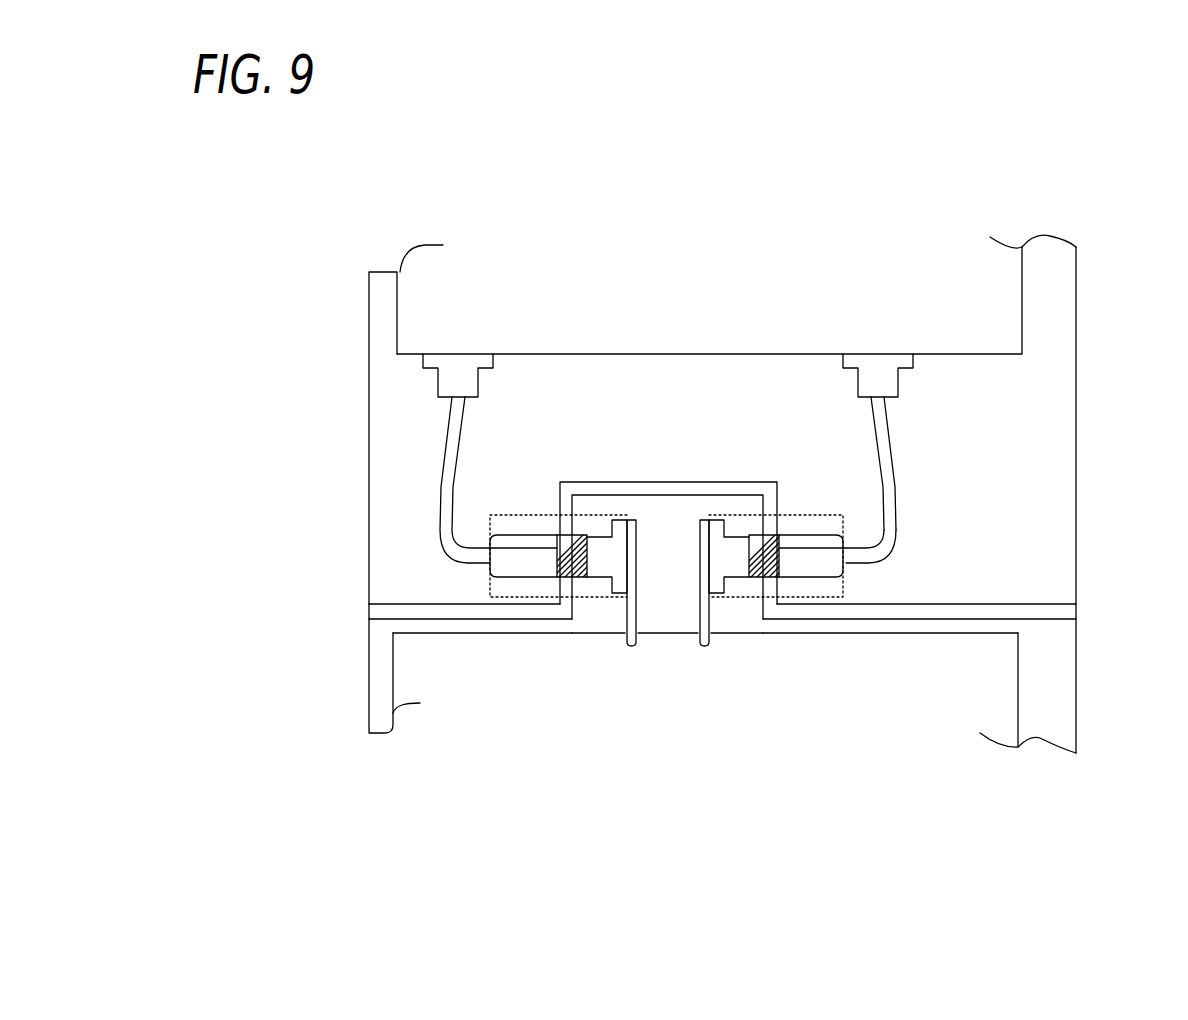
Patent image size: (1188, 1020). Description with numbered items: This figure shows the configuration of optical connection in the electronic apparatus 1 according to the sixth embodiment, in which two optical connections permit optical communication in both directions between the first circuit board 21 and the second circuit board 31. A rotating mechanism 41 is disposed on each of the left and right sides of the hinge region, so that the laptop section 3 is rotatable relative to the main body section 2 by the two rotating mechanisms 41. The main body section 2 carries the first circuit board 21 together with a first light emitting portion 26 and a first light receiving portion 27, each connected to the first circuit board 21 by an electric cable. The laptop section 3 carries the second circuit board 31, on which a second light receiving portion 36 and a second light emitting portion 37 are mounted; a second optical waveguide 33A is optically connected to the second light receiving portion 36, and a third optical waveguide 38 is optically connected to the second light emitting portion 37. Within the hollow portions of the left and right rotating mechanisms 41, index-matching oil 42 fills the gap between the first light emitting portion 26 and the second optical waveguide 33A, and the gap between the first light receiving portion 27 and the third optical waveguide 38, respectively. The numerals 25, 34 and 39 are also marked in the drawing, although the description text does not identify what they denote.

The electronic apparatus 1 is at (1024, 194).
The main body section 2 is at (1058, 662).
The laptop section 3 is at (1057, 273).
The first circuit board 21 is at (602, 658).
The pin terminal 25 is at (627, 612).
The first light emitting portion 26 is at (608, 568).
The first light receiving portion 27 is at (720, 570).
The second circuit board 31 is at (397, 303).
The second optical waveguide 33A is at (445, 443).
The terminal 34 is at (665, 512).
The second light receiving portion 36 is at (437, 382).
The second light emitting portion 37 is at (900, 385).
The third optical waveguide 38 is at (890, 448).
The wire bent portion 39 is at (897, 537).
The rotating mechanism 41 is at (490, 590).
The index-matching oil 42 is at (555, 578).